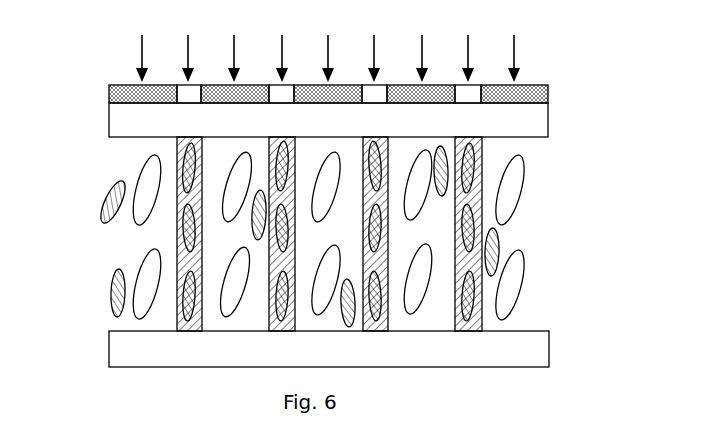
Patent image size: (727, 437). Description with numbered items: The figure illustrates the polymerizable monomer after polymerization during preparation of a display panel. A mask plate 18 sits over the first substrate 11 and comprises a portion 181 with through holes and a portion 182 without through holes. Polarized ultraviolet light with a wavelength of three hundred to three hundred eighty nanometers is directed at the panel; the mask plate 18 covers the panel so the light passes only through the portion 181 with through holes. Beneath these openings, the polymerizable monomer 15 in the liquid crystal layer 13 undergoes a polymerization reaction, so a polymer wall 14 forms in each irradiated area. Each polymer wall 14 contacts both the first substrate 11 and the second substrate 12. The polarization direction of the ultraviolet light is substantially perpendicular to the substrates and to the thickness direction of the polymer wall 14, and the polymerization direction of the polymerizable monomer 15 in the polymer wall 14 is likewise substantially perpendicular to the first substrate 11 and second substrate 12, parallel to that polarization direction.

The first substrate 11 is at (109, 130).
The second substrate 12 is at (109, 356).
The liquid crystal layer 13 is at (525, 229).
The polymer wall 14 is at (177, 152).
The polymerizable monomer 15 is at (111, 292).
The mask plate 18 is at (303, 90).
The portion with through holes 181 is at (462, 98).
The portion without through holes 182 is at (530, 93).